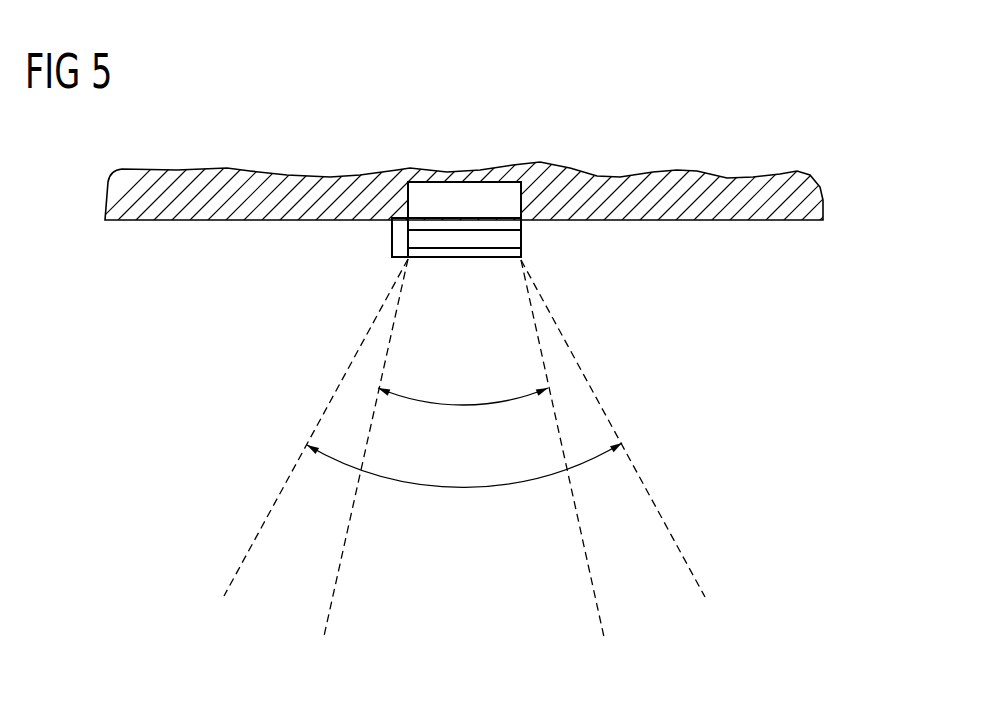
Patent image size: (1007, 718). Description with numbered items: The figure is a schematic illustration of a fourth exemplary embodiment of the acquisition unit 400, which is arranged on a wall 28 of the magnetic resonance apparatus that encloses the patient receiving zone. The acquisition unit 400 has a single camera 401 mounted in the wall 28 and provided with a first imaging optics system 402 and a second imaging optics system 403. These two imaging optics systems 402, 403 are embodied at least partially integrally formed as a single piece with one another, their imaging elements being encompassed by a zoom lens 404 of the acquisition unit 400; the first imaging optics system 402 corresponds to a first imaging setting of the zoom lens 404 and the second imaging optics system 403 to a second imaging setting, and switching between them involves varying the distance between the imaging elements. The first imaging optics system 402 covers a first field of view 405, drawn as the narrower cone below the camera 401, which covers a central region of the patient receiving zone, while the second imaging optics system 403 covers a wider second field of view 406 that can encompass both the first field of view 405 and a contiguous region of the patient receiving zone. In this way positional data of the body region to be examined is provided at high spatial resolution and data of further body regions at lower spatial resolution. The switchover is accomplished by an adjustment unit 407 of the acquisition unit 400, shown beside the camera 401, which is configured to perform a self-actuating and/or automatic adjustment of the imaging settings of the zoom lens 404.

The wall 28 is at (678, 185).
The acquisition unit 400 is at (462, 172).
The camera 401 is at (491, 192).
The first imaging optics system 402 is at (423, 258).
The second imaging optics system 403 is at (461, 258).
The zoom lens 404 is at (434, 212).
The first field of view 405 is at (463, 407).
The second field of view 406 is at (463, 490).
The adjustment unit 407 is at (393, 243).